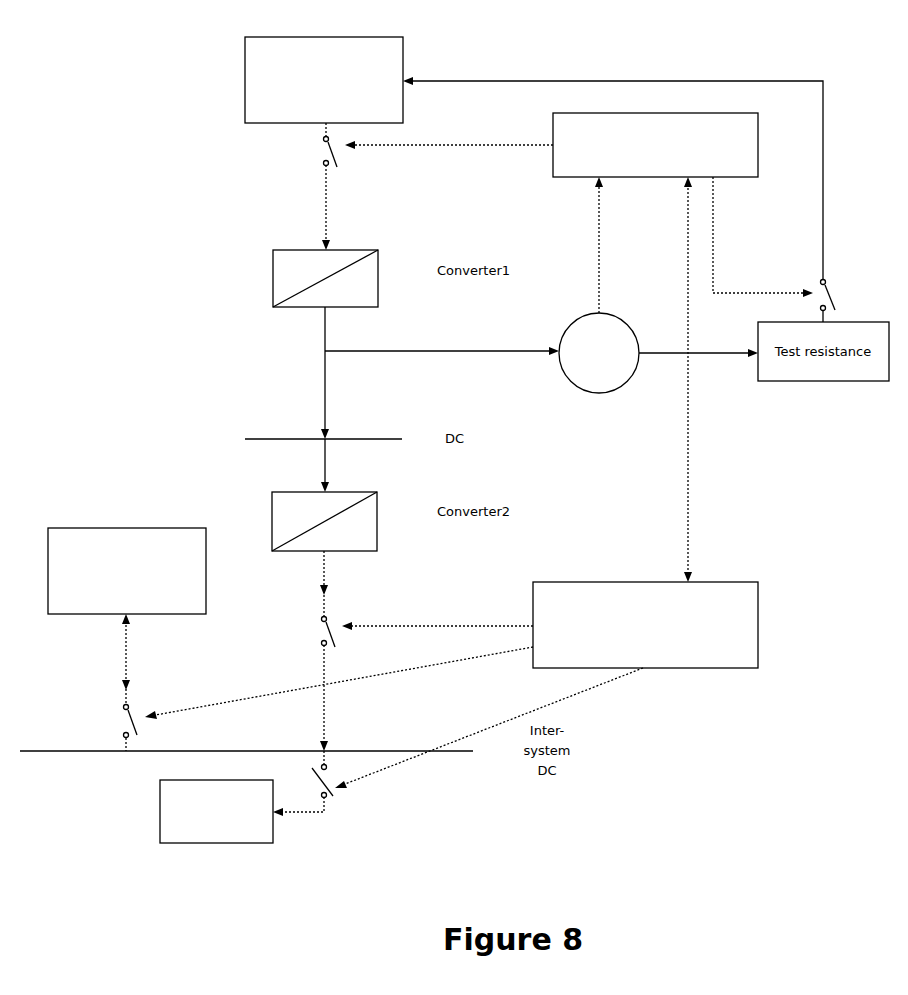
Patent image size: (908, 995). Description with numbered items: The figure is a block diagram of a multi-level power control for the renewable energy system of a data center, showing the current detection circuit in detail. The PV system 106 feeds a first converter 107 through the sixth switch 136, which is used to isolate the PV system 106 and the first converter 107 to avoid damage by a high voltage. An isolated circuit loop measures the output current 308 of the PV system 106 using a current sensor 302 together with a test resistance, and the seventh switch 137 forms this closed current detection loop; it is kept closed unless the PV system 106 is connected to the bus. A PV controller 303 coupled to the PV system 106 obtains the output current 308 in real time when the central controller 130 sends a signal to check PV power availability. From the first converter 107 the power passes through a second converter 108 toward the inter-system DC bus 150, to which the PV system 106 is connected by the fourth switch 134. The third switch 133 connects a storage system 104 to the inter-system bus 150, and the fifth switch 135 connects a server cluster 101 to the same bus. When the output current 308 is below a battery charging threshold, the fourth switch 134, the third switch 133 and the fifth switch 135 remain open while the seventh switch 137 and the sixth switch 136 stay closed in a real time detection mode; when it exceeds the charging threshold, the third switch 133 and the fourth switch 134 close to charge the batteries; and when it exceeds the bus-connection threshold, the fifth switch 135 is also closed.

The PV system 106 is at (324, 80).
The PV controller 303 is at (655, 145).
The central controller 130 is at (645, 625).
The storage system 104 is at (127, 571).
The server cluster 101 is at (216, 811).
The converter 1 107 is at (273, 273).
The converter 2 108 is at (270, 514).
The current sensor 302 is at (627, 388).
The output current 308 is at (420, 351).
The switch S6 136 is at (322, 154).
The switch S7 137 is at (840, 291).
The switch S4 134 is at (320, 631).
The switch S3 133 is at (125, 720).
The switch S5 135 is at (355, 814).
The inter-system DC bus 150 is at (238, 751).